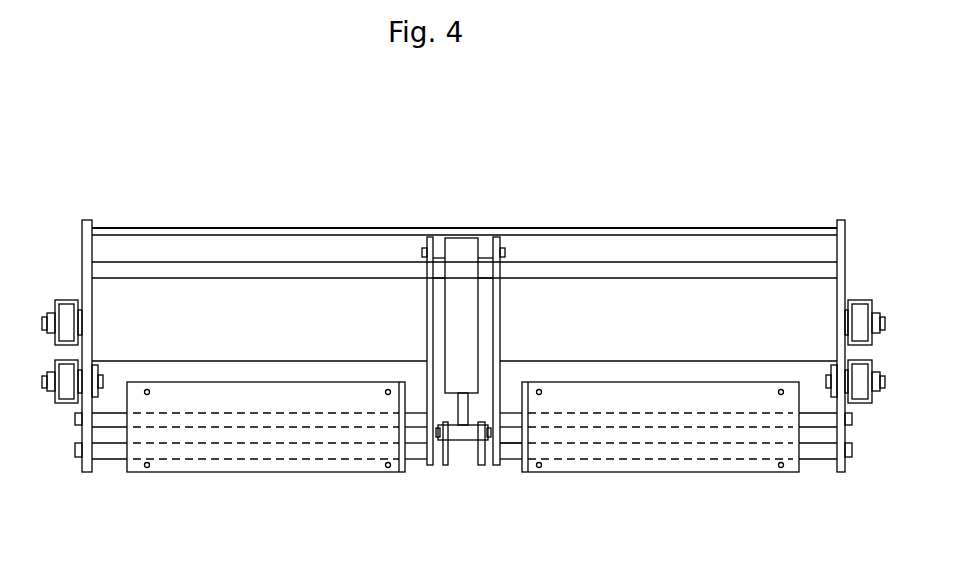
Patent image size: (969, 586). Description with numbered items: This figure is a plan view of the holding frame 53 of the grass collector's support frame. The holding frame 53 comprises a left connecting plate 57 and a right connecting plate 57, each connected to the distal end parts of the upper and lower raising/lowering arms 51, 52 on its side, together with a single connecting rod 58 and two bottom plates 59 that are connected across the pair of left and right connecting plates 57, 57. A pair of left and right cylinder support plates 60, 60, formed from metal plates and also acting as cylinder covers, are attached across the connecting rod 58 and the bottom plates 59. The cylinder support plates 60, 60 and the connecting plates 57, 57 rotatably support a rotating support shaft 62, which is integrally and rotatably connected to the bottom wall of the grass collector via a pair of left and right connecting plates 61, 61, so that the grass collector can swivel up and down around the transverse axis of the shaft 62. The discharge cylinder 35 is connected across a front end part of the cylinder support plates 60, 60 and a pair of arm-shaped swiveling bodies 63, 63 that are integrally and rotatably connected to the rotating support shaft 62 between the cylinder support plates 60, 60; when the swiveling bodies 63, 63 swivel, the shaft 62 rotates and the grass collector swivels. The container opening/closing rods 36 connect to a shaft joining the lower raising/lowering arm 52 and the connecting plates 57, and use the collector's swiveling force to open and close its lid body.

The discharge cylinder 35 is at (463, 248).
The container opening/closing rod 36 is at (98, 377).
The upper raising/lowering arm 51 is at (66, 300).
The lower raising/lowering arm 52 is at (66, 403).
The holding frame 53 is at (467, 345).
The connecting plate 57 is at (92, 307).
The connecting rod 58 is at (818, 420).
The bottom plate 59 is at (225, 300).
The cylinder support plate 60 is at (427, 322).
The connecting plate 61 is at (240, 465).
The rotating support shaft 62 is at (513, 455).
The swiveling body 63 is at (478, 467).